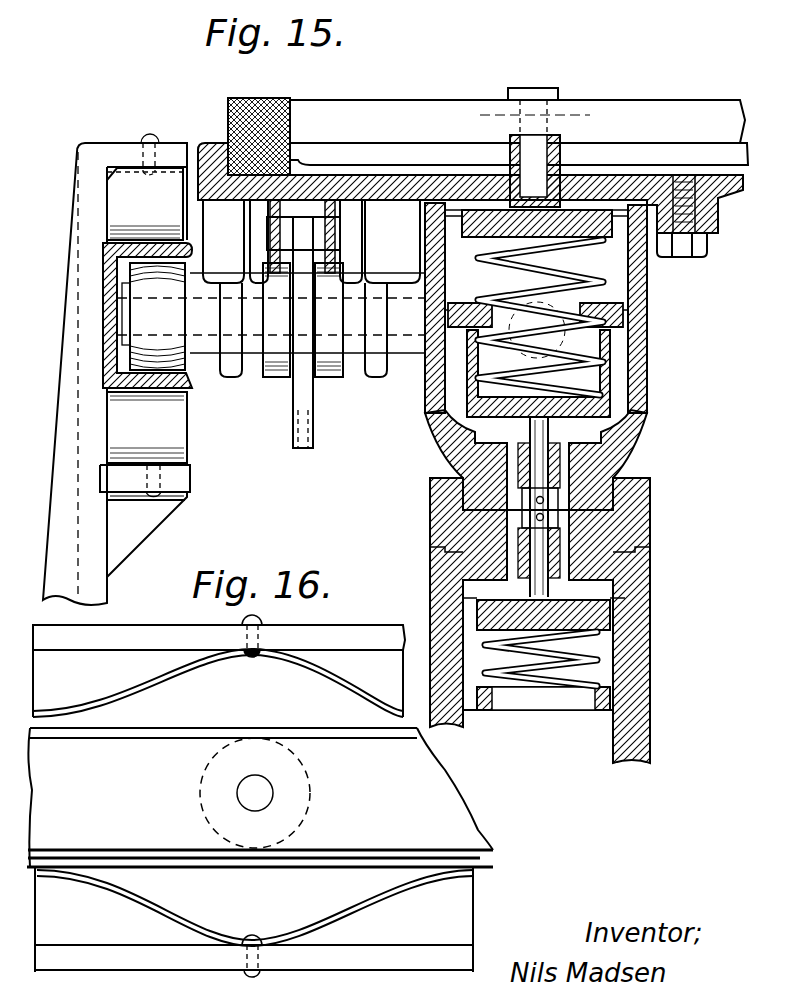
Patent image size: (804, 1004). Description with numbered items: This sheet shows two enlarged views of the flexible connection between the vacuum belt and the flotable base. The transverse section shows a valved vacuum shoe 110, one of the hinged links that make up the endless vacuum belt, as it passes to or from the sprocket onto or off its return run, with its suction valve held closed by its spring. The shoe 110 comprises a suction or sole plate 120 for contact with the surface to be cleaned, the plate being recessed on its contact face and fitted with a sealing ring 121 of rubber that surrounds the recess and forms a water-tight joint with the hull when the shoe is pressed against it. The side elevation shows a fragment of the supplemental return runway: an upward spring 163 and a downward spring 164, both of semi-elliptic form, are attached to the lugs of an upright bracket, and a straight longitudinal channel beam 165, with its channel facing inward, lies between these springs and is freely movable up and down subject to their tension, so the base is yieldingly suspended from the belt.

In FIG. 15, the valved vacuum shoe 110 is at (563, 483).
In FIG. 15, the suction or sole plate 120 is at (321, 117).
In FIG. 15, the sealing ring 121 is at (616, 103).
In FIG. 15, the upward spring 163 is at (160, 215).
In FIG. 16, the upward spring 163 is at (150, 677).
In FIG. 15, the downward spring 164 is at (160, 424).
In FIG. 16, the downward spring 164 is at (190, 934).
In FIG. 15, the channel beam 165 is at (188, 381).